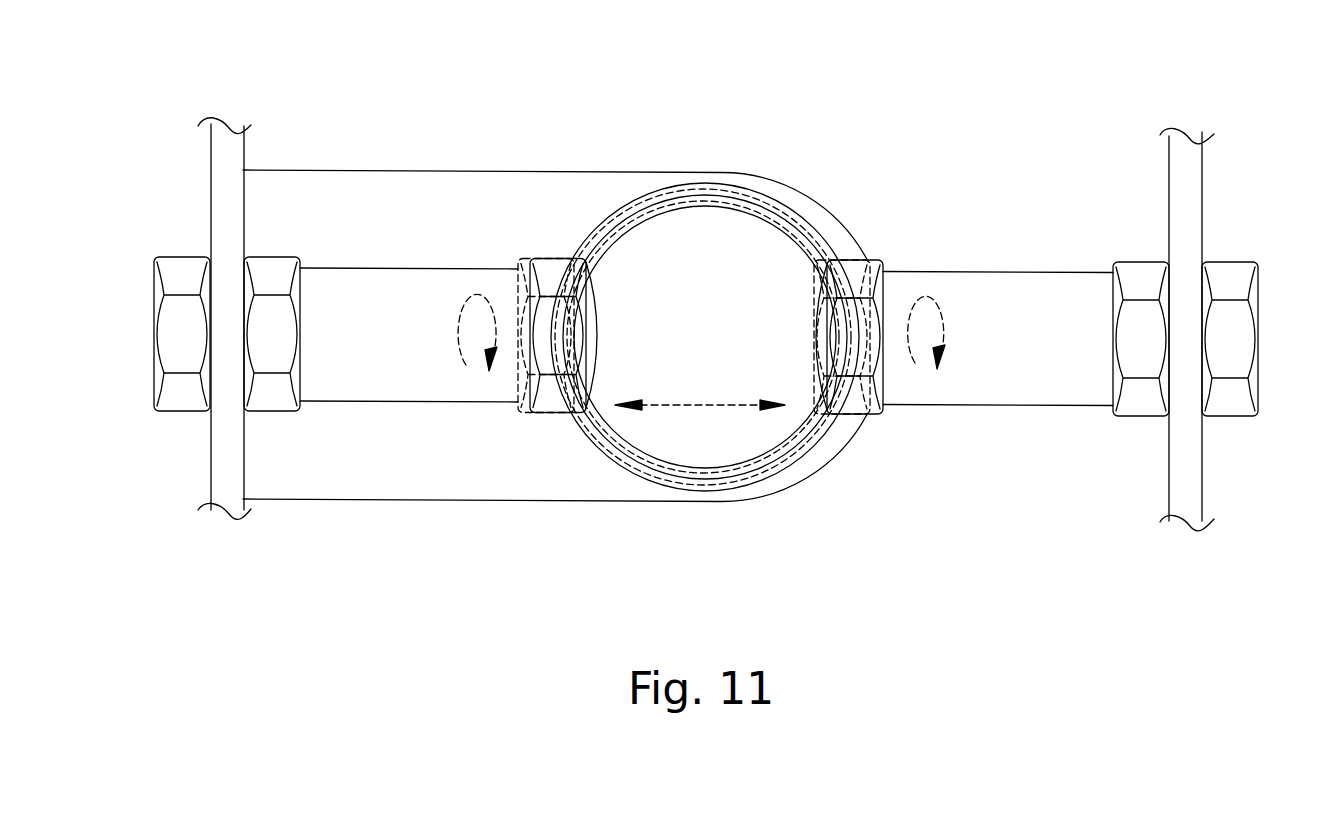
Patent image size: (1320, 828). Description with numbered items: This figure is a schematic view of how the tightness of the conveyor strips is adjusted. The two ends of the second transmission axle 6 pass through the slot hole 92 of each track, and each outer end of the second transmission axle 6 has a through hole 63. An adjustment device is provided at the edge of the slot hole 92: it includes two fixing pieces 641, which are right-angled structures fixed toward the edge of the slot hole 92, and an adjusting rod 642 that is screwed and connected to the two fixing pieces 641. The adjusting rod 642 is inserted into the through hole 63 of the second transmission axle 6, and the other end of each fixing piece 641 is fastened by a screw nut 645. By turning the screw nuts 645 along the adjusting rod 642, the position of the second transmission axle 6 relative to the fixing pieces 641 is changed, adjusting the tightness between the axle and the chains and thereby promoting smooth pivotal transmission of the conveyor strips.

The second transmission axle 6 is at (723, 265).
The through hole 63 is at (590, 338).
The slot hole 92 is at (433, 198).
The fixing piece 641 is at (223, 183).
The adjusting rod 642 is at (363, 290).
The screw nut 645 is at (557, 400).